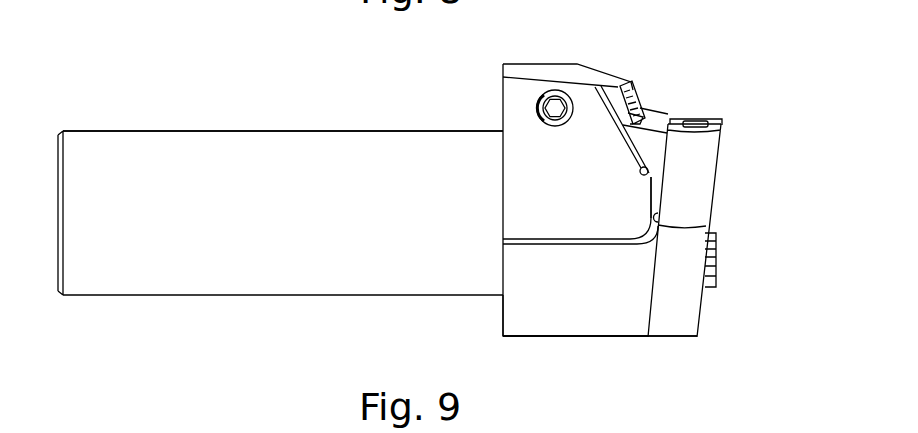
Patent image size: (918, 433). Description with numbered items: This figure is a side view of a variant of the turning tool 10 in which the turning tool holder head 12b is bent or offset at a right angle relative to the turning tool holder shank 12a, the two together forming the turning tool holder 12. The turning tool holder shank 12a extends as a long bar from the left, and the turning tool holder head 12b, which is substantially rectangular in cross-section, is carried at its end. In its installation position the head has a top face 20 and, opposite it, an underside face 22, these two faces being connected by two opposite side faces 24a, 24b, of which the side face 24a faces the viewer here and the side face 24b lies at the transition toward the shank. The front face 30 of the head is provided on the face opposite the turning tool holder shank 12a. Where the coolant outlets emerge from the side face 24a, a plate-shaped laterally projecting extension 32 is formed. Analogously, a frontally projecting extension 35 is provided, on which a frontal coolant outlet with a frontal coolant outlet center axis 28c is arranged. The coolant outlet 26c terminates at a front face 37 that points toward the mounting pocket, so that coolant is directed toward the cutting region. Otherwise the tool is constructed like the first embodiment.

The turning tool 10 is at (203, 97).
The turning tool holder 12 is at (123, 282).
The turning tool holder shank 12a is at (123, 152).
The turning tool holder head 12b is at (573, 73).
The top face 20 is at (614, 56).
The underside face 22 is at (573, 345).
The side face 24a is at (738, 229).
The side face 24b is at (494, 306).
The coolant outlet 26c is at (648, 172).
The frontal coolant outlet center axis 28c is at (663, 155).
The front face 30 is at (618, 316).
The laterally projecting extension 32 is at (712, 270).
The frontally projecting extension 35 is at (576, 203).
The front face 37 is at (632, 133).